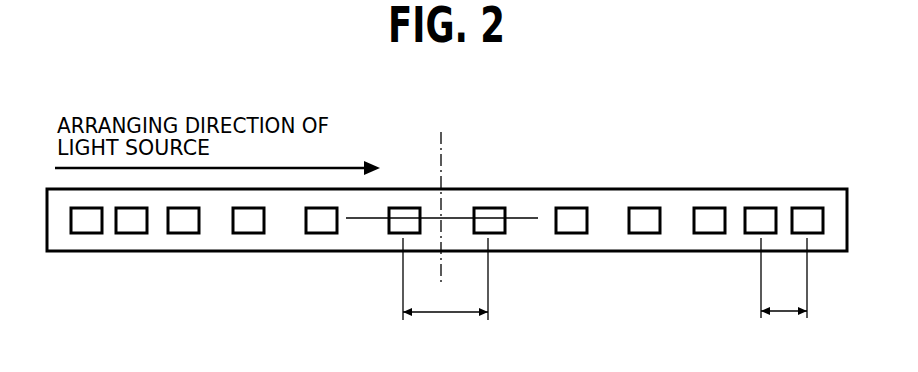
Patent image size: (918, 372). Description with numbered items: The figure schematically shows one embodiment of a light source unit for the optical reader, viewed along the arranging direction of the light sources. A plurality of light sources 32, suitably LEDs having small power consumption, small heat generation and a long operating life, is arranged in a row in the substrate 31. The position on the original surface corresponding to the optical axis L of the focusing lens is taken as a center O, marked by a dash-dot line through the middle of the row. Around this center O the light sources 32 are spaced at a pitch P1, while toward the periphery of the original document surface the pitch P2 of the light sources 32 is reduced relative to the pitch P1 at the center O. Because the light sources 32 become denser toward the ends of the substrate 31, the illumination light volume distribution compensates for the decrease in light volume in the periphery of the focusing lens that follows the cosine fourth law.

The substrate 31 is at (68, 244).
The light source 32 is at (86, 222).
The optical axis L is at (443, 198).
The center O is at (446, 216).
The pitch of light sources in the center P1 is at (445, 288).
The pitch of light sources in the periphery P2 is at (784, 288).